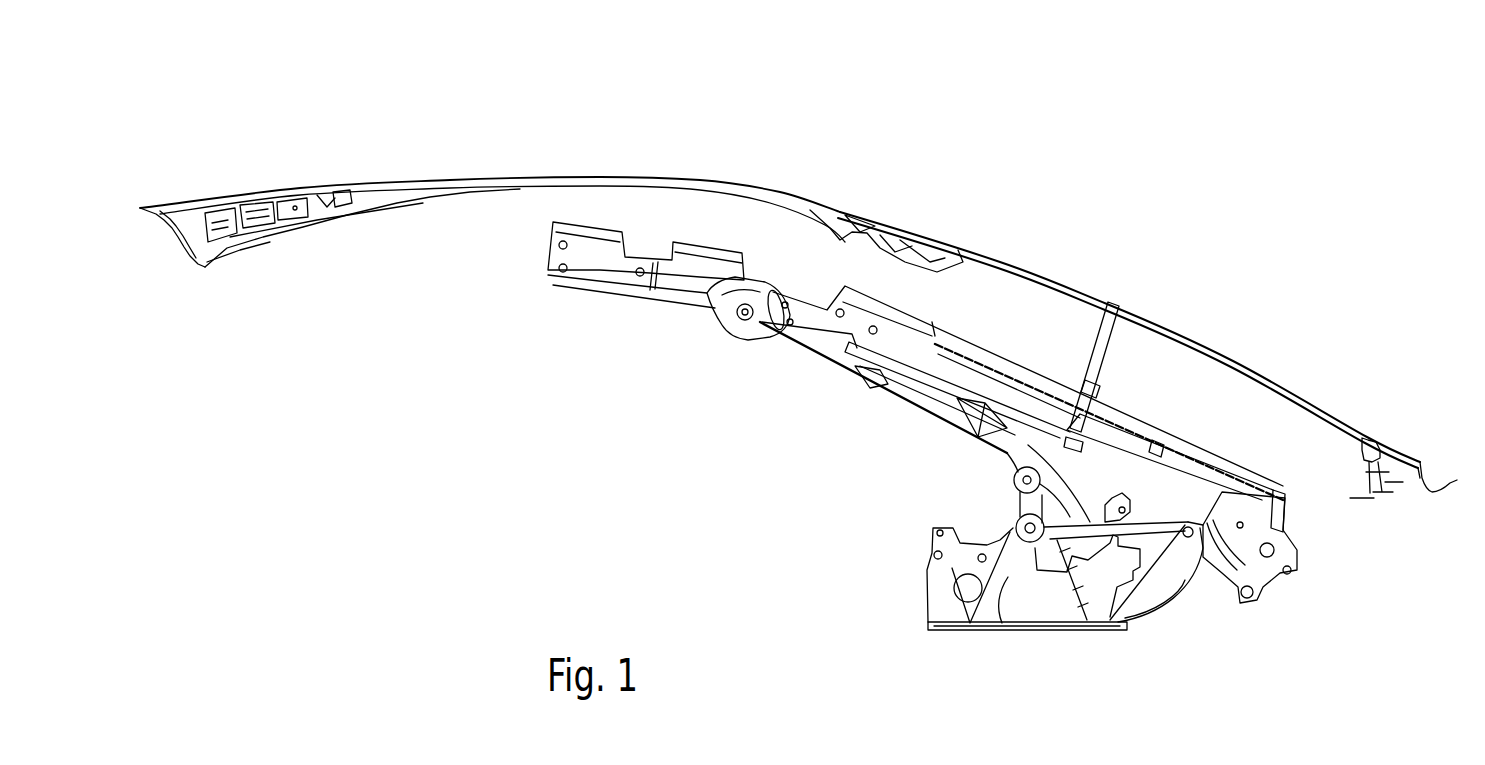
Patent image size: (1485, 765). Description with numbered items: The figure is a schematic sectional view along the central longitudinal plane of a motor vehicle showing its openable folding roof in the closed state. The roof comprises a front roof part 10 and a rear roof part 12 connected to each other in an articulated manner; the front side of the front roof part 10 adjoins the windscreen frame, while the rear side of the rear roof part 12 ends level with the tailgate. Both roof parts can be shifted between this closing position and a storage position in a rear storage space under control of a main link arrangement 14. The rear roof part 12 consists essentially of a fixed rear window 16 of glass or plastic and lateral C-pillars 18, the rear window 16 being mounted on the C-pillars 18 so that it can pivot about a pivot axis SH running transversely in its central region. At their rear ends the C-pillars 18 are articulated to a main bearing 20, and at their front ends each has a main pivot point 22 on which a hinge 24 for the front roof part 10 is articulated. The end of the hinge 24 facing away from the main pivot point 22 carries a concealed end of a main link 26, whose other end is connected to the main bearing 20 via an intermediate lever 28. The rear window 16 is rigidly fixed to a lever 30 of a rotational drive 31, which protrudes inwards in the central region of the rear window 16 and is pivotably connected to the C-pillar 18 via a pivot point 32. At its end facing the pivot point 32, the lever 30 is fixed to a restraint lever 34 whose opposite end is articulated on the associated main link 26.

The front roof part 10 is at (631, 116).
The rear roof part 12 is at (1175, 272).
The main link arrangement 14 is at (866, 410).
The rear window 16 is at (1228, 358).
The C-pillars 18 is at (1027, 378).
The main bearing 20 is at (1018, 582).
The main pivot point 22 is at (748, 320).
The hinge 24 is at (582, 257).
The main link 26 is at (922, 405).
The intermediate lever 28 is at (1068, 500).
The lever 30 is at (1105, 318).
The rotational drive 31 is at (1003, 340).
The pivot point 32 is at (1100, 387).
The restraint lever 34 is at (1007, 460).
The pivot axis SH is at (1098, 408).